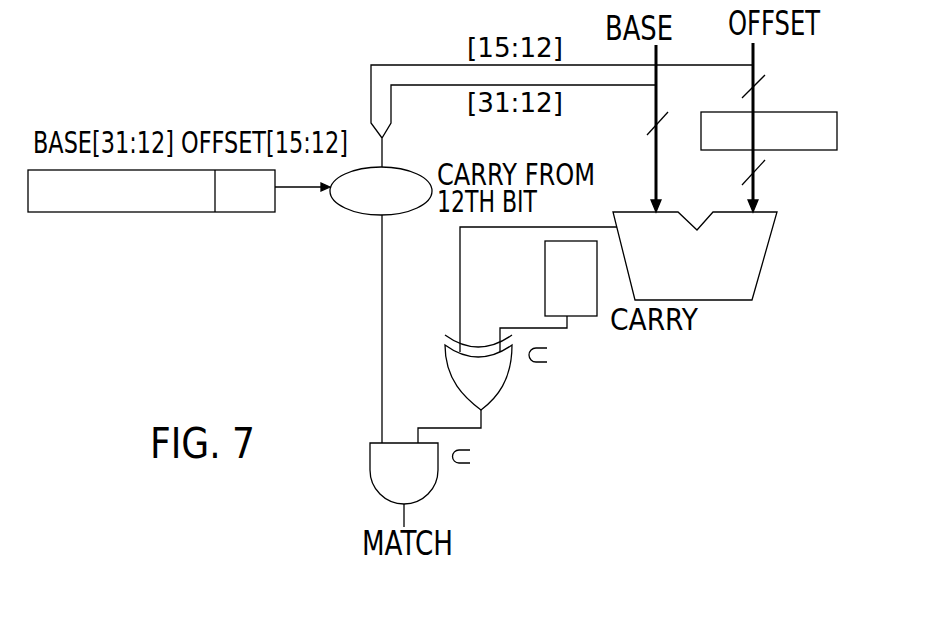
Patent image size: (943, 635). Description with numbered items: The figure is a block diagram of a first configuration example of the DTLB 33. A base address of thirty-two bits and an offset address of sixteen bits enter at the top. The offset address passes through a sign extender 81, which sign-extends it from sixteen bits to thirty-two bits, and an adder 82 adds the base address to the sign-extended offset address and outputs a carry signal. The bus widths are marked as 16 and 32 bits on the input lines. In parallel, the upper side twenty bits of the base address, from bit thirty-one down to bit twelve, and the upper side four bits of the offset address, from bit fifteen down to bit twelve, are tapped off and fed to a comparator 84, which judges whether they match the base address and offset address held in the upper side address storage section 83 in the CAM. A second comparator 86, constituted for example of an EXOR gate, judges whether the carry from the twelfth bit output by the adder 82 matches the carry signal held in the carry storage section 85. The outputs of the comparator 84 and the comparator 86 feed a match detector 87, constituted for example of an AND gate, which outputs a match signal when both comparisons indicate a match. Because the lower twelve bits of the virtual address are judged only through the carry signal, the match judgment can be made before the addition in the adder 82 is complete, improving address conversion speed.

The 16-bit offset bus 16 is at (771, 78).
The 32-bit bus 32 is at (703, 151).
The DTLB 33 is at (720, 357).
The sign extender 81 is at (805, 112).
The adder 82 is at (743, 280).
The upper side address storage section 83 is at (123, 205).
The comparator 84 is at (330, 193).
The carry storage section 85 is at (588, 307).
The comparator 86 is at (495, 377).
The match detector 87 is at (415, 477).